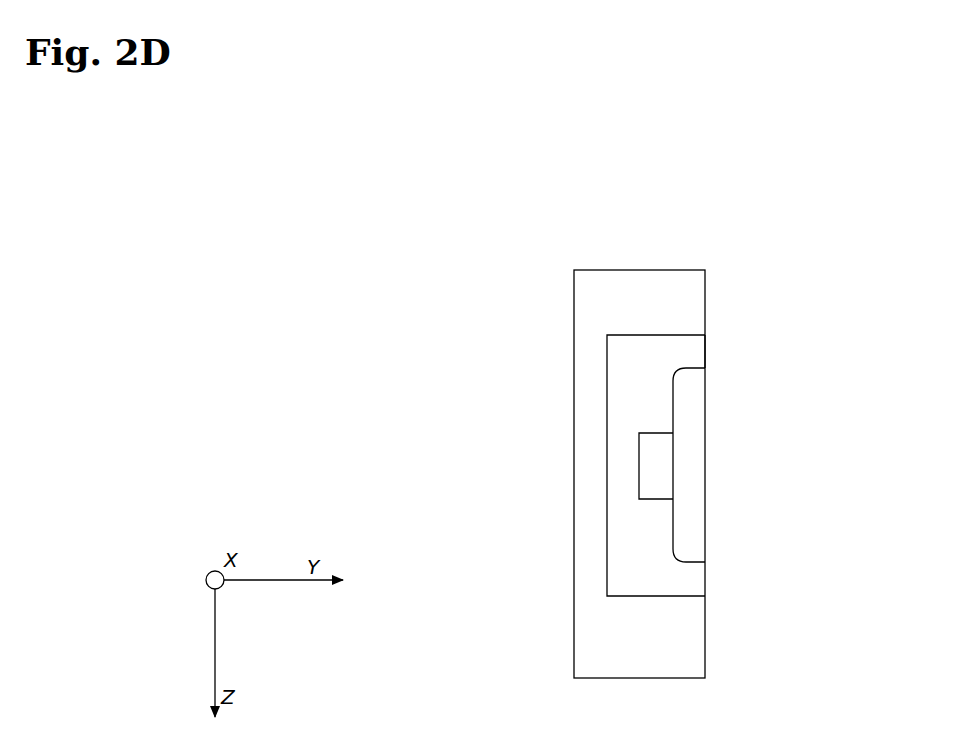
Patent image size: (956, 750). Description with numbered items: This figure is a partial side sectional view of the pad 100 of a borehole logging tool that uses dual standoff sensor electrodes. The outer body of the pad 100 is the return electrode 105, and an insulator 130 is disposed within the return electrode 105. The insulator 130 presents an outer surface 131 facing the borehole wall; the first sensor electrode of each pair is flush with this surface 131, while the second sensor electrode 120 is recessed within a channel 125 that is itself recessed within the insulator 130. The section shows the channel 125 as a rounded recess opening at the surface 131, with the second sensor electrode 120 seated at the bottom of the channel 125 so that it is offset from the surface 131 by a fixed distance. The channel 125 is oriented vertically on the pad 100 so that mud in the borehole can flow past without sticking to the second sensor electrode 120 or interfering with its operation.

The pad 100 is at (413, 367).
The return electrode 105 is at (575, 290).
The second sensor electrode 120 is at (657, 465).
The channel 125 is at (689, 530).
The insulator 130 is at (625, 546).
The surface of the insulator 131 is at (703, 350).